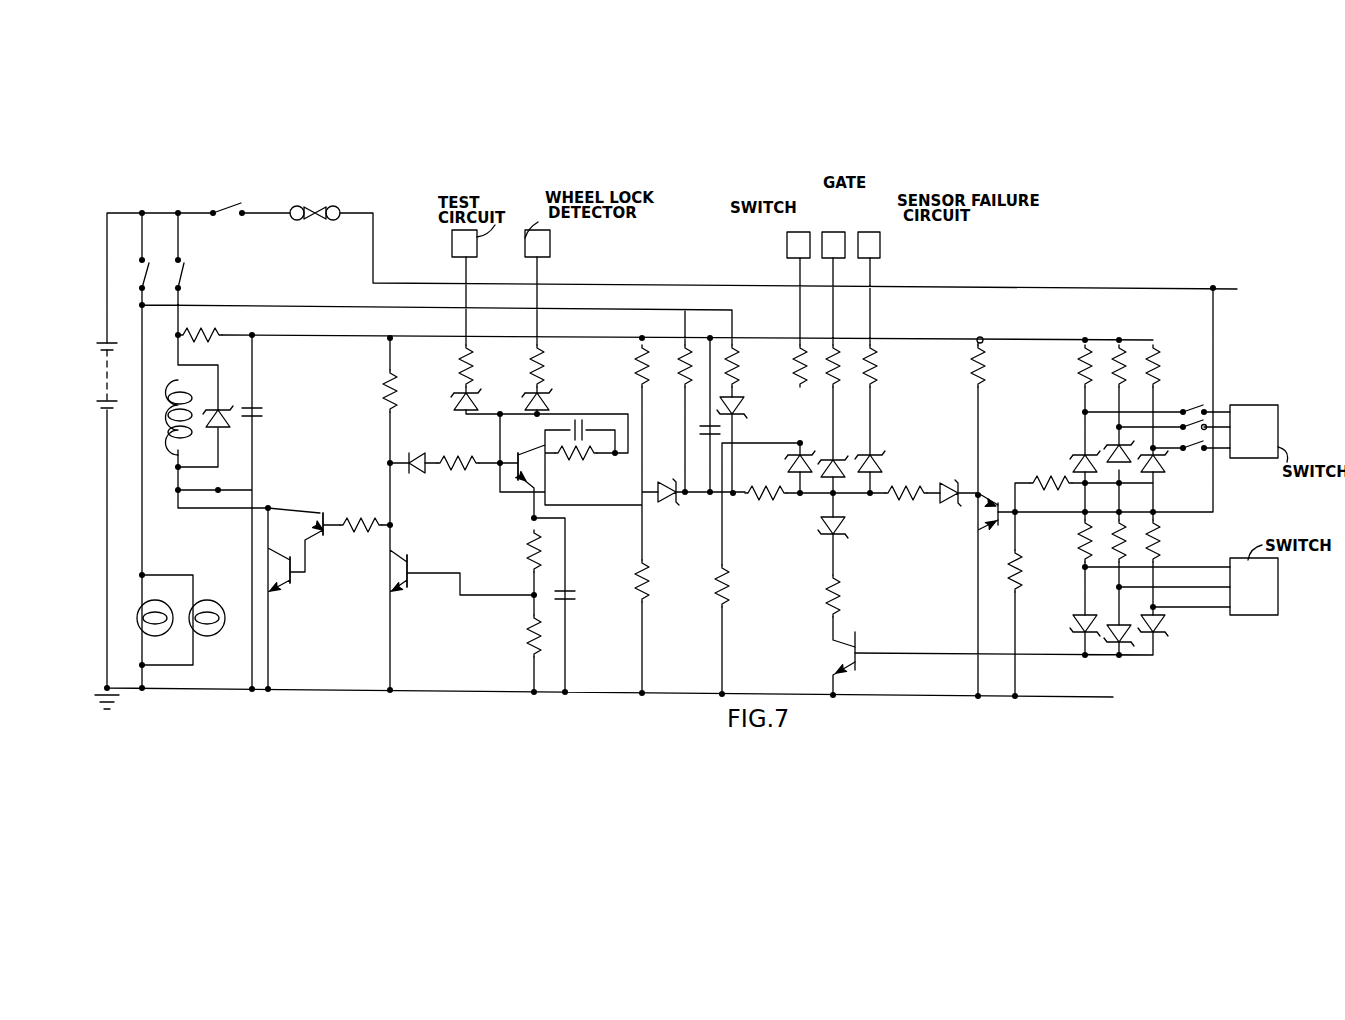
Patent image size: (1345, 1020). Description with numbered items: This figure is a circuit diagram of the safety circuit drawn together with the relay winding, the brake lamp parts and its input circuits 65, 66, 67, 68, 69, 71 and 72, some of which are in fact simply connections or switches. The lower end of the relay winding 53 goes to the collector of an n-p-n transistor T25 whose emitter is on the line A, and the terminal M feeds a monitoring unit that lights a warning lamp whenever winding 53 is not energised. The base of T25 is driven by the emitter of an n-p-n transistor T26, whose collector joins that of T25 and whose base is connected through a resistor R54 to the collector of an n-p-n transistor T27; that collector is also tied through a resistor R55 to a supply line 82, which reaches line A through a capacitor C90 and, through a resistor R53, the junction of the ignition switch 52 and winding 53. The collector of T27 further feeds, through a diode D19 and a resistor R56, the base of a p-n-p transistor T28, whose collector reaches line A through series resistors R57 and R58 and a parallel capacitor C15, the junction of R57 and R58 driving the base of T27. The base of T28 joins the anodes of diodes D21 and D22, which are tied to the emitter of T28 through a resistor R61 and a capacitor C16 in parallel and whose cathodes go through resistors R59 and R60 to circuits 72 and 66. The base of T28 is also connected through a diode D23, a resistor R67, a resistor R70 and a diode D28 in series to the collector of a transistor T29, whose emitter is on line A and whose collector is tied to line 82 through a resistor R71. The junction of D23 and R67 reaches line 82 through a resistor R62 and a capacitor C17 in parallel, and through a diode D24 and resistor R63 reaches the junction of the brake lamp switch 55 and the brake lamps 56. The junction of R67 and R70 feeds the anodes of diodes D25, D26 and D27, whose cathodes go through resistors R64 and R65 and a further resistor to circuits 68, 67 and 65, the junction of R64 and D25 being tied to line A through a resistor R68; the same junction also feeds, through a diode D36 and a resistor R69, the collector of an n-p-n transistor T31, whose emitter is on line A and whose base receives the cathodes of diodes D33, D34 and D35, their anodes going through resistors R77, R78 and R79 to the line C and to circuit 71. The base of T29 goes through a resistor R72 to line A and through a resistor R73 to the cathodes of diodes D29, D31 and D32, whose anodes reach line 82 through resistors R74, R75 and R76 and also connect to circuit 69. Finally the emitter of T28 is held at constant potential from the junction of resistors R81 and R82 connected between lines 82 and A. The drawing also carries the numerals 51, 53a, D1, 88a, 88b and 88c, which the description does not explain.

The battery 51 is at (129, 362).
The ignition switch 52 is at (180, 268).
The relay winding 53 is at (169, 386).
The relay contact 53a is at (235, 211).
The brake lamp switch 55 is at (300, 207).
The brake lamps 56 is at (206, 640).
The circuit 65 is at (876, 250).
The circuit 66 is at (550, 243).
The circuit 67 is at (852, 195).
The circuit 68 is at (803, 232).
The circuit 69 is at (1245, 416).
The circuit 71 is at (1258, 606).
The circuit 72 is at (450, 242).
The supply line 82 is at (333, 340).
The switch contact 88a is at (1194, 405).
The switch contact 88b is at (1198, 431).
The switch contact 88c is at (1200, 450).
The line A is at (312, 691).
The line C is at (358, 218).
The terminal M is at (264, 490).
The diode D1 is at (226, 412).
The capacitor C90 is at (259, 418).
The resistor R53 is at (212, 332).
The resistor R55 is at (384, 396).
The resistor R54 is at (360, 540).
The n-p-n transistor T25 is at (280, 571).
The n-p-n transistor T26 is at (310, 525).
The n-p-n transistor T27 is at (395, 578).
The resistor R59 is at (463, 351).
The resistor R60 is at (533, 352).
The resistor R81 is at (636, 352).
The resistor R62 is at (674, 336).
The resistor R63 is at (738, 352).
The resistor R64 is at (777, 374).
The resistor R65 is at (836, 355).
The resistor R56 is at (878, 383).
The resistor R71 is at (988, 352).
The resistor R74 is at (1078, 360).
The resistor R75 is at (1116, 349).
The resistor R76 is at (1154, 345).
The diode D21 is at (455, 400).
The diode D22 is at (526, 400).
The capacitor C16 is at (578, 420).
The capacitor C17 is at (700, 430).
The diode D24 is at (742, 412).
The diode D25 is at (790, 460).
The diode D26 is at (840, 465).
The diode D27 is at (885, 466).
The diode D23 is at (668, 504).
The resistor R67 is at (770, 504).
The diode D36 is at (820, 525).
The resistor R70 is at (900, 505).
The diode D28 is at (948, 505).
The transistor T29 is at (986, 500).
The resistor R73 is at (1048, 504).
The resistor R72 is at (1008, 576).
The diode D29 is at (1076, 462).
The diode D31 is at (1122, 470).
The diode D32 is at (1160, 470).
The resistor R77 is at (1080, 560).
The resistor R78 is at (1116, 528).
The resistor R79 is at (1158, 524).
The diode D33 is at (1076, 628).
The diode D34 is at (1124, 650).
The diode D35 is at (1160, 637).
The n-p-n transistor T31 is at (845, 655).
The resistor R69 is at (848, 593).
The resistor R68 is at (735, 588).
The resistor R82 is at (650, 588).
The diode D19 is at (417, 488).
The p-n-p transistor T28 is at (517, 482).
The resistor R61 is at (575, 480).
The resistor R57 is at (522, 542).
The resistor R58 is at (524, 637).
The capacitor C15 is at (577, 601).